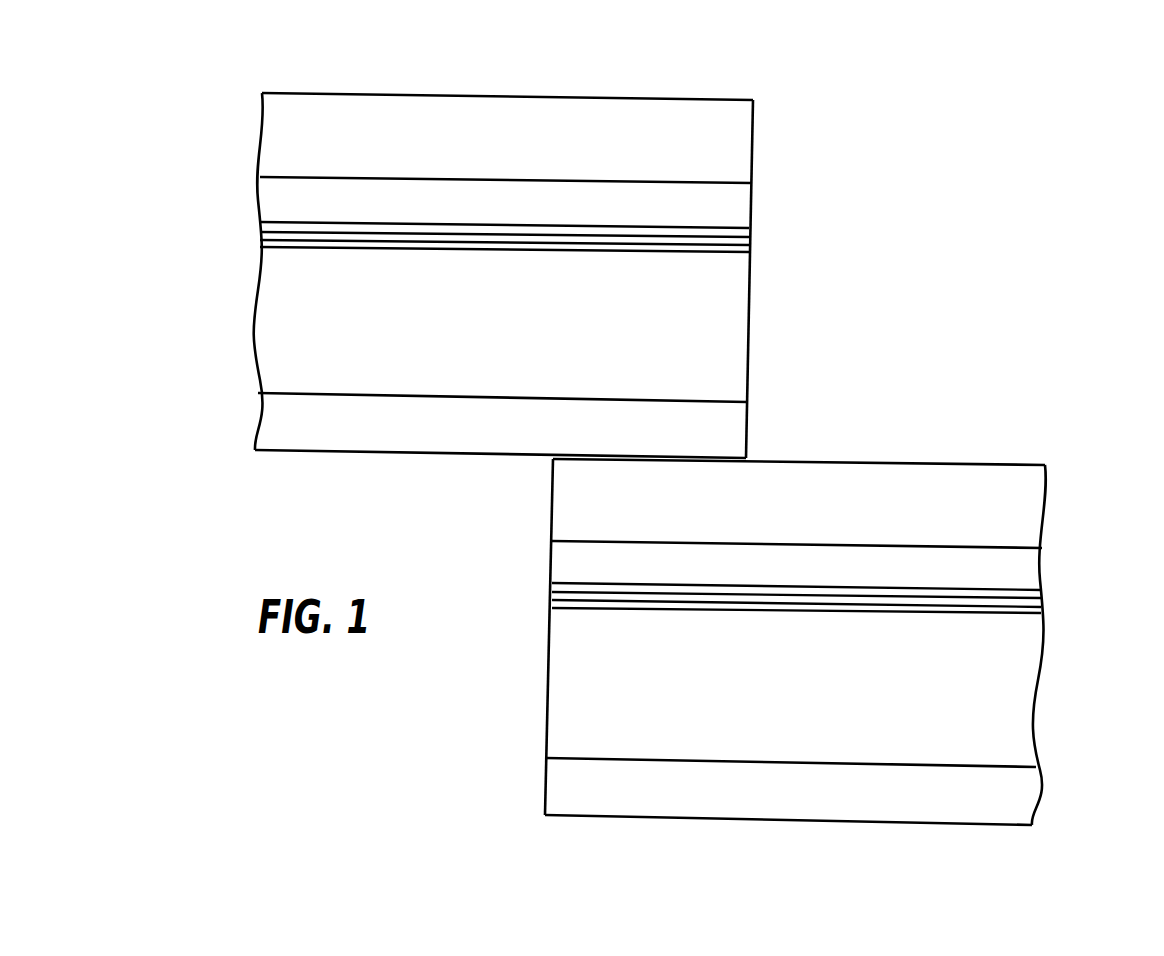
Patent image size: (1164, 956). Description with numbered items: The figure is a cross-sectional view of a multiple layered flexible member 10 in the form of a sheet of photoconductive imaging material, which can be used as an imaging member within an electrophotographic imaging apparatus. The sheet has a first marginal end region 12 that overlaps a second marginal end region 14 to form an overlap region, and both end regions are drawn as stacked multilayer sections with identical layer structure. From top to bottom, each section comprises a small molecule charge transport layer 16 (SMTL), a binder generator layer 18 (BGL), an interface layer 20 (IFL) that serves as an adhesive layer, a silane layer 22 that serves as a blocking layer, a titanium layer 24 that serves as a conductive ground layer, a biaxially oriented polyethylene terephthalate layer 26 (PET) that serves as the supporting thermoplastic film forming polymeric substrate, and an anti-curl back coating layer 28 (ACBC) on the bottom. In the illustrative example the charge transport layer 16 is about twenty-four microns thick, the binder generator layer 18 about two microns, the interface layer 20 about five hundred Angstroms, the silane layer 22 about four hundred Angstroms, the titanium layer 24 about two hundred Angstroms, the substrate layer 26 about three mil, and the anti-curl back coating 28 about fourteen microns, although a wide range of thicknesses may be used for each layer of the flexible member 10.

The flexible member 10 is at (864, 185).
The first marginal end region 12 is at (658, 88).
The second marginal end region 14 is at (698, 838).
The small molecule charge transport layer 16 is at (275, 127).
The binder generator layer 18 is at (270, 188).
The interface layer 20 is at (260, 223).
The silane layer 22 is at (262, 234).
The titanium layer 24 is at (262, 241).
The polyethylene terephthalate layer 26 is at (278, 320).
The anti-curl back coating layer 28 is at (272, 407).